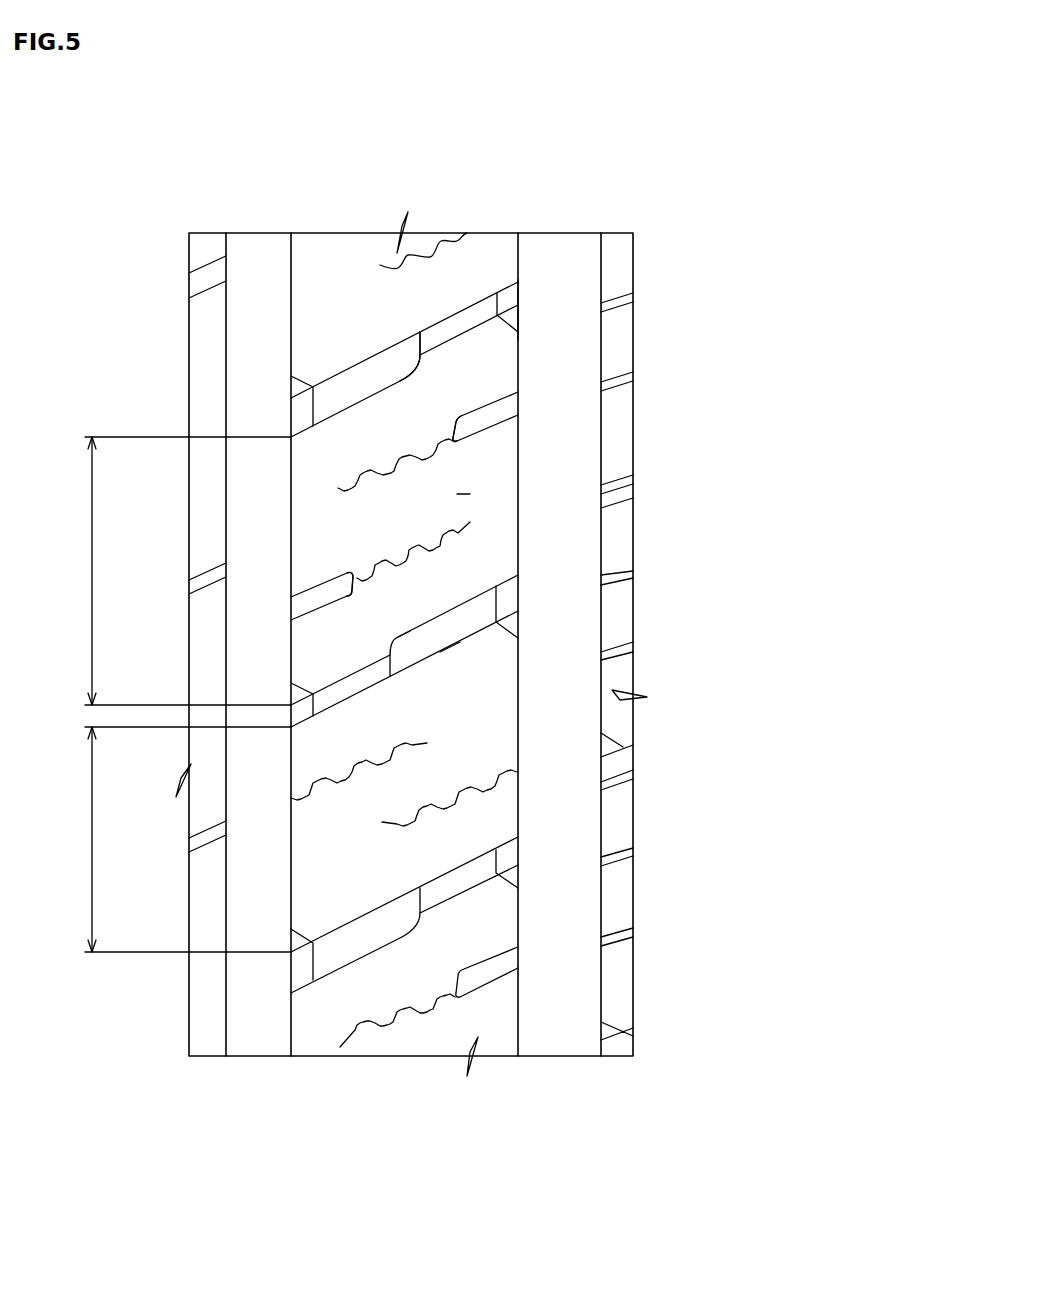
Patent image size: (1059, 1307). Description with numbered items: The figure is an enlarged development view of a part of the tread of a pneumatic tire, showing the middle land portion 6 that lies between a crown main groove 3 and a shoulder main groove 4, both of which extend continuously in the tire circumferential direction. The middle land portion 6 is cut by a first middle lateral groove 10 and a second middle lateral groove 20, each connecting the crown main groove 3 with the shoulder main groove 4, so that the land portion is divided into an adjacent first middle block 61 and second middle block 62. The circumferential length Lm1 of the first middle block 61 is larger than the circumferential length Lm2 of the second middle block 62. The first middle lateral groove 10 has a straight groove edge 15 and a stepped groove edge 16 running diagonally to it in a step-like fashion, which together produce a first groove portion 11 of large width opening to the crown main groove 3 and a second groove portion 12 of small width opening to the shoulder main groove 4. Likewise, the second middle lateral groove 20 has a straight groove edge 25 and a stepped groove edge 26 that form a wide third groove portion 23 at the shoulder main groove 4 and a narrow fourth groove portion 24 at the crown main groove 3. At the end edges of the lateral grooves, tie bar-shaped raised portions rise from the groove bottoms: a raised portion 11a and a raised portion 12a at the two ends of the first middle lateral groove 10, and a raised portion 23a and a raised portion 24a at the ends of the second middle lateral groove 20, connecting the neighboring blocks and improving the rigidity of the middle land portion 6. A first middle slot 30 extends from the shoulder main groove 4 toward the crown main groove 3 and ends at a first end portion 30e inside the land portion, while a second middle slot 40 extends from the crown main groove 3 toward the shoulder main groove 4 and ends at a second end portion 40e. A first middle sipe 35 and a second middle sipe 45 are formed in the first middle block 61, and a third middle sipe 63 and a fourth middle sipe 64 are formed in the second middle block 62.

The crown main groove 3 is at (244, 361).
The shoulder main groove 4 is at (583, 266).
The middle land portion 6 is at (470, 245).
The first middle lateral groove 10 is at (380, 346).
The first groove portion 11 is at (342, 385).
The raised portion 11a is at (302, 410).
The second groove portion 12 is at (480, 312).
The raised portion 12a is at (508, 300).
The straight groove edge 15 is at (452, 314).
The stepped groove edge 16 is at (422, 370).
The second middle lateral groove 20 is at (443, 649).
The third groove portion 23 is at (467, 612).
The raised portion 23a is at (508, 596).
The fourth groove portion 24 is at (345, 693).
The raised portion 24a is at (305, 702).
The straight groove edge 25 is at (365, 686).
The stepped groove edge 26 is at (392, 643).
The first middle slot 30 is at (495, 413).
The first end portion 30e is at (445, 425).
The first middle sipe 35 is at (403, 462).
The second middle slot 40 is at (327, 592).
The second end portion 40e is at (360, 578).
The second middle sipe 45 is at (475, 520).
The first middle block 61 is at (457, 494).
The second middle block 62 is at (352, 852).
The third middle sipe 63 is at (370, 760).
The fourth middle sipe 64 is at (405, 812).
The circumferential length of the first middle block Lm1 is at (160, 571).
The circumferential length of the second middle block Lm2 is at (160, 839).